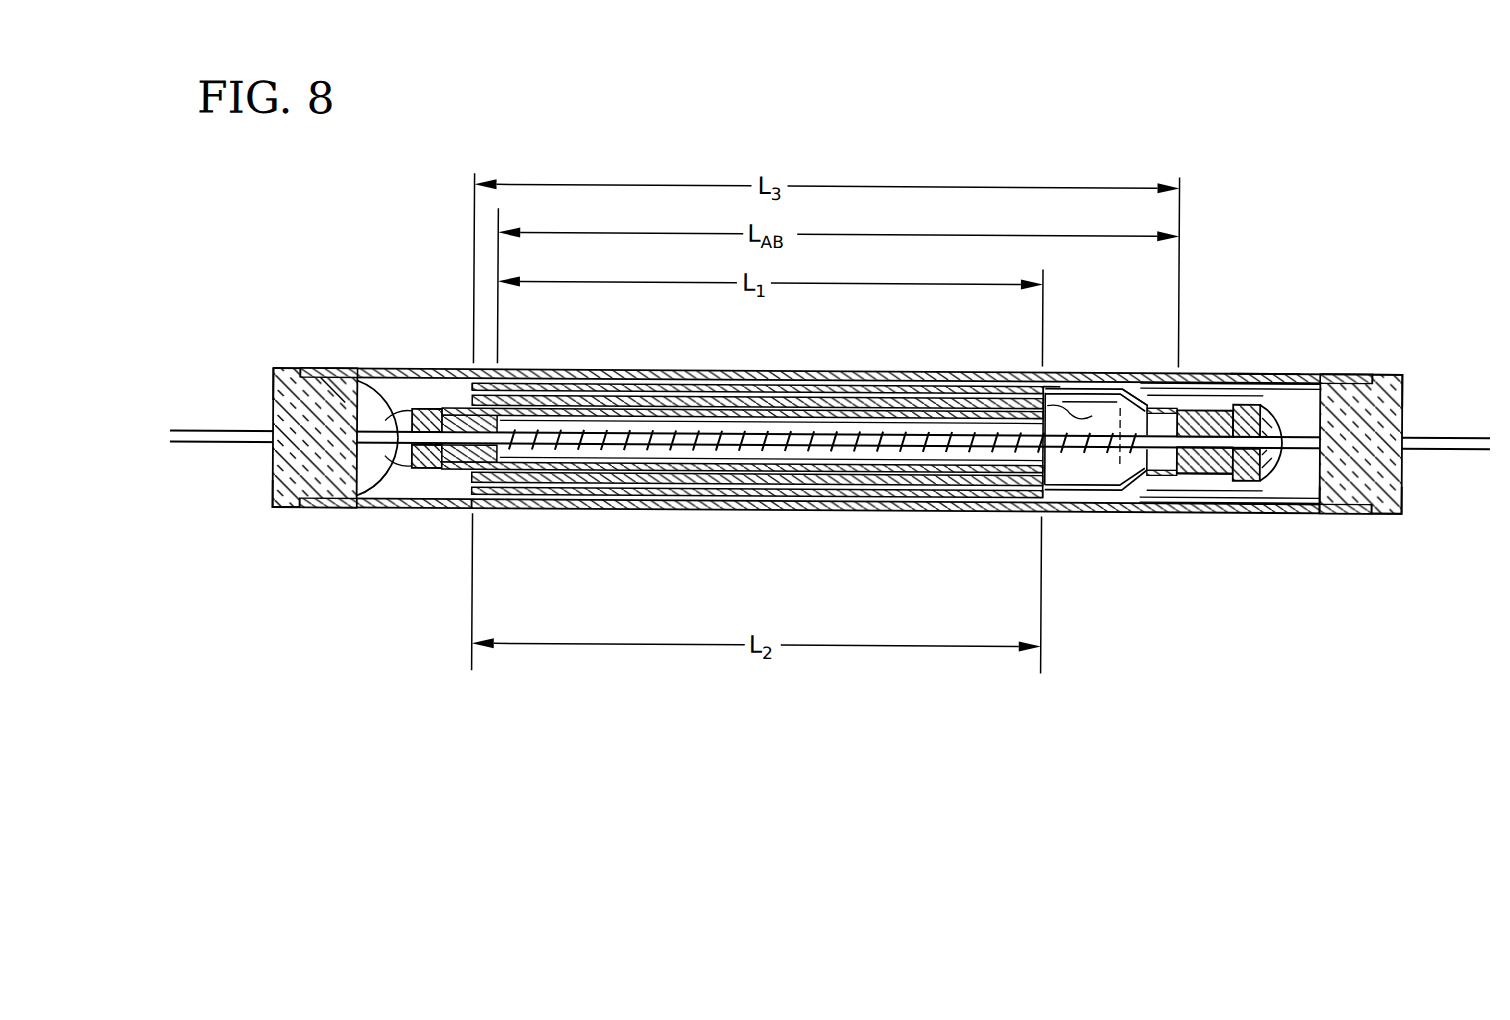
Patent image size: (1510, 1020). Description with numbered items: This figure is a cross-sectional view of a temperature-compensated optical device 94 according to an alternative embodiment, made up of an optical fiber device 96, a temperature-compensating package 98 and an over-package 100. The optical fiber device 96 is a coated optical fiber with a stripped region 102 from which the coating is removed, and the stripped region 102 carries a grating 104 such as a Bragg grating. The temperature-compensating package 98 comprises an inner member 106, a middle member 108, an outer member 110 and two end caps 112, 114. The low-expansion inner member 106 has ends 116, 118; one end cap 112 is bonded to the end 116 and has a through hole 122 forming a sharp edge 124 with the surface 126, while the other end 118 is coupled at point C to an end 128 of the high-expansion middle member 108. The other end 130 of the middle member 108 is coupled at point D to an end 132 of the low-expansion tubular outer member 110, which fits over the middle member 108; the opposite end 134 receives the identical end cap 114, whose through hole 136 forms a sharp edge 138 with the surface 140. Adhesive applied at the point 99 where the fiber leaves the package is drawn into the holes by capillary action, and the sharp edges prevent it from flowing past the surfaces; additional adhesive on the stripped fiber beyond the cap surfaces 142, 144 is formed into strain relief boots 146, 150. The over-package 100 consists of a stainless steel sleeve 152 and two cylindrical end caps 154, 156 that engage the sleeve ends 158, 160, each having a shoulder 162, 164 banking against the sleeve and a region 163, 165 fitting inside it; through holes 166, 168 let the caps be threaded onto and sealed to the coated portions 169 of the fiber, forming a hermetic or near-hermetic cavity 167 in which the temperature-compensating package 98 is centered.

The temperature-compensated optical device 94 is at (1262, 319).
The optical fiber device 96 is at (1148, 476).
The temperature-compensating package 98 is at (1228, 484).
The point where the optical fiber device extends from the temperature-compensating p 99 is at (352, 494).
The over-package 100 is at (1283, 520).
The stripped region 102 is at (520, 448).
The grating 104 is at (713, 449).
The inner member 106 is at (932, 466).
The middle member 108 is at (990, 491).
The outer member 110 is at (1118, 489).
The end cap 112 is at (413, 409).
The end cap 114 is at (1205, 398).
The end of inner member 116 is at (450, 415).
The end of inner member 118 is at (1050, 462).
The through hole 122 is at (413, 466).
The sharp edge 124 is at (505, 425).
The surface of end cap 126 is at (520, 390).
The end of middle member 128 is at (1053, 385).
The end of middle member 130 is at (473, 484).
The end of outer member 132 is at (494, 508).
The end of outer member 134 is at (1150, 390).
The through hole 136 is at (1203, 452).
The sharp edge 138 is at (1135, 390).
The surface of end cap 140 is at (1178, 466).
The surface of end cap 142 is at (357, 383).
The surface of end cap 144 is at (1264, 403).
The strain relief boot 146 is at (325, 376).
The strain relief boot 150 is at (1268, 452).
The sleeve 152 is at (862, 504).
The end cap 154 is at (273, 506).
The end cap 156 is at (1395, 508).
The end of sleeve 158 is at (300, 369).
The end of sleeve 160 is at (1338, 369).
The shoulder 162 is at (296, 372).
The region of end cap 163 is at (300, 508).
The shoulder 164 is at (1385, 372).
The region of end cap 165 is at (1368, 509).
The through hole 166 is at (280, 459).
The cavity 167 is at (1315, 494).
The through hole 168 is at (1403, 452).
The coated portion of optical fiber device 169 is at (180, 431).
The point D is at (472, 383).